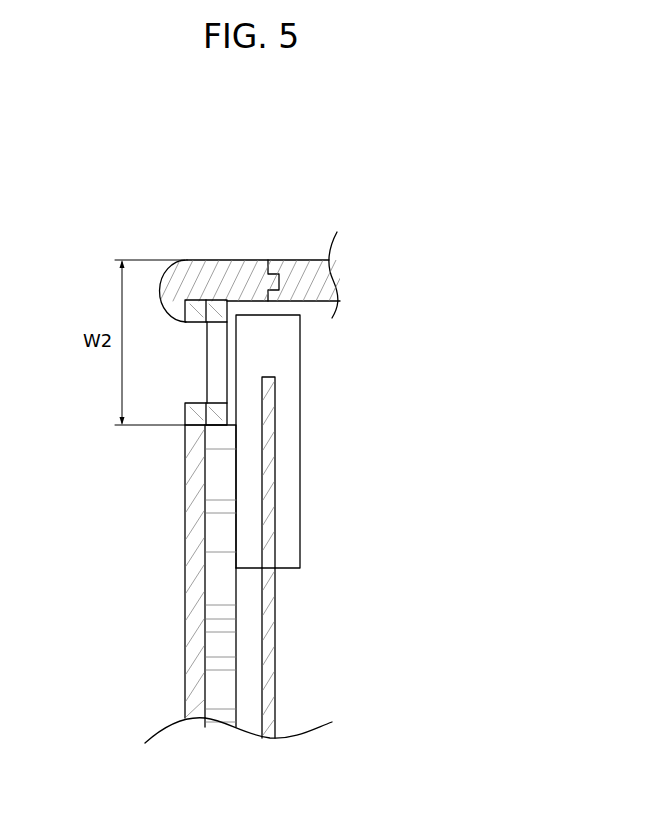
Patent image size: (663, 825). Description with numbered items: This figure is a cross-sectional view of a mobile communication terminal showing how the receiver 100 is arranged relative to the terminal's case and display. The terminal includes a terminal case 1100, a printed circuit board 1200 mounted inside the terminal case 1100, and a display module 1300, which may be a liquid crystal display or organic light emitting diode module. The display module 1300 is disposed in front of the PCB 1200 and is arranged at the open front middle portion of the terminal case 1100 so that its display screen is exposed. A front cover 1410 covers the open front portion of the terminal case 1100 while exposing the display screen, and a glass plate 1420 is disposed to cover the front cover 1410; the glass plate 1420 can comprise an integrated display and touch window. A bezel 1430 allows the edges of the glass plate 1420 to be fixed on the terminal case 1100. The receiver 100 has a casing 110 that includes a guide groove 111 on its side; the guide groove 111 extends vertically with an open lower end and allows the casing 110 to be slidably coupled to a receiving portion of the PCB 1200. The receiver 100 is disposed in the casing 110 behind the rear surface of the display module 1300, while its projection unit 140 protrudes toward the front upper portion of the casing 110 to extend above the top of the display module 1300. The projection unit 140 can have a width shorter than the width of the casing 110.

The receiver 100 is at (342, 441).
The casing 110 is at (287, 430).
The guide groove 111 is at (277, 522).
The projection unit 140 is at (225, 355).
The terminal case 1100 is at (307, 275).
The printed circuit board 1200 is at (269, 629).
The display module 1300 is at (219, 685).
The front cover 1410 is at (223, 412).
The glass plate 1420 is at (185, 650).
The bezel 1430 is at (210, 272).